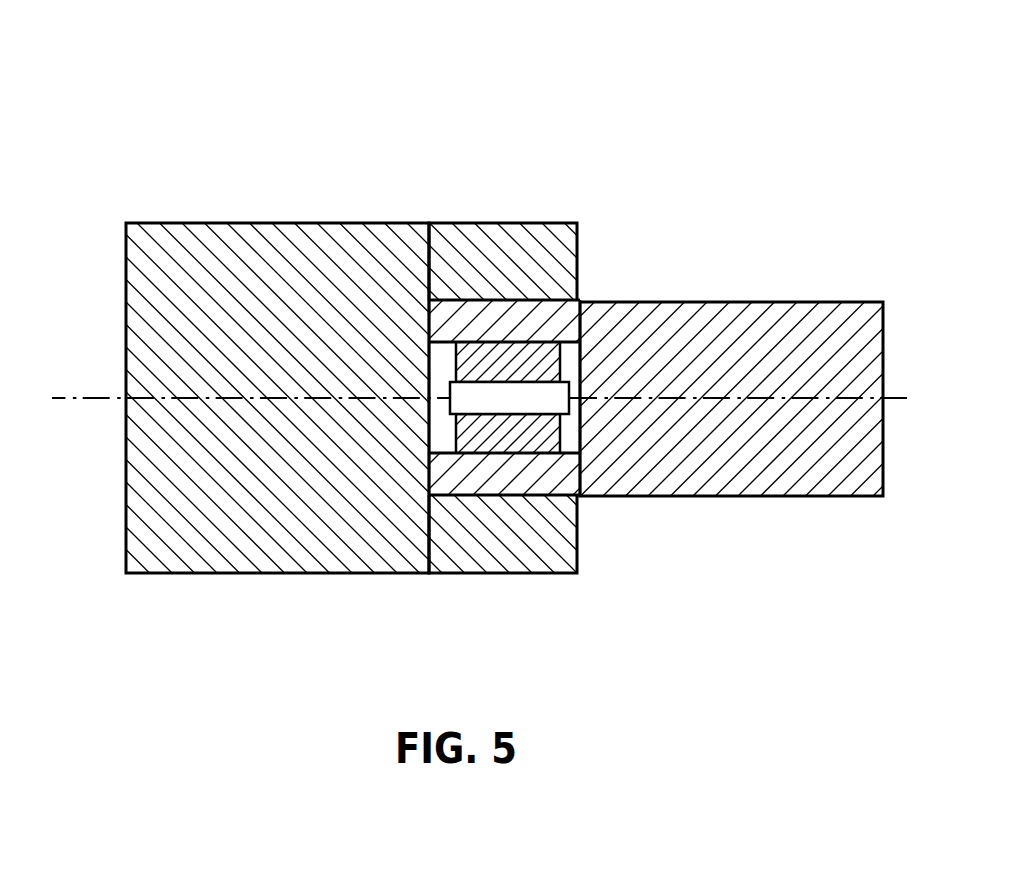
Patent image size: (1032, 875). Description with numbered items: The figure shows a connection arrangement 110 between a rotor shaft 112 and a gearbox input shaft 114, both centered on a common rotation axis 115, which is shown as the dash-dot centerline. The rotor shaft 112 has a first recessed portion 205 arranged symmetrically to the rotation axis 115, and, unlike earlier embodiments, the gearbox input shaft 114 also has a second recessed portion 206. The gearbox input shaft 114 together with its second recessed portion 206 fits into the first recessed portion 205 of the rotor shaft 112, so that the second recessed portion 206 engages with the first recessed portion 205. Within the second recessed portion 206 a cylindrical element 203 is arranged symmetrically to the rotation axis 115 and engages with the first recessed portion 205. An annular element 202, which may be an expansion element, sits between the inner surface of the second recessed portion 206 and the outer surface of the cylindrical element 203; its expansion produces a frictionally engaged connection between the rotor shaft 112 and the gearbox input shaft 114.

The assembly 110 is at (620, 39).
The rotor shaft 112 is at (228, 573).
The gearbox input shaft 114 is at (733, 496).
The rotation axis 115 is at (98, 400).
The annular element 202 is at (560, 363).
The cylindrical element 203 is at (510, 415).
The first recessed portion 205 is at (503, 545).
The second recessed portion 206 is at (541, 318).